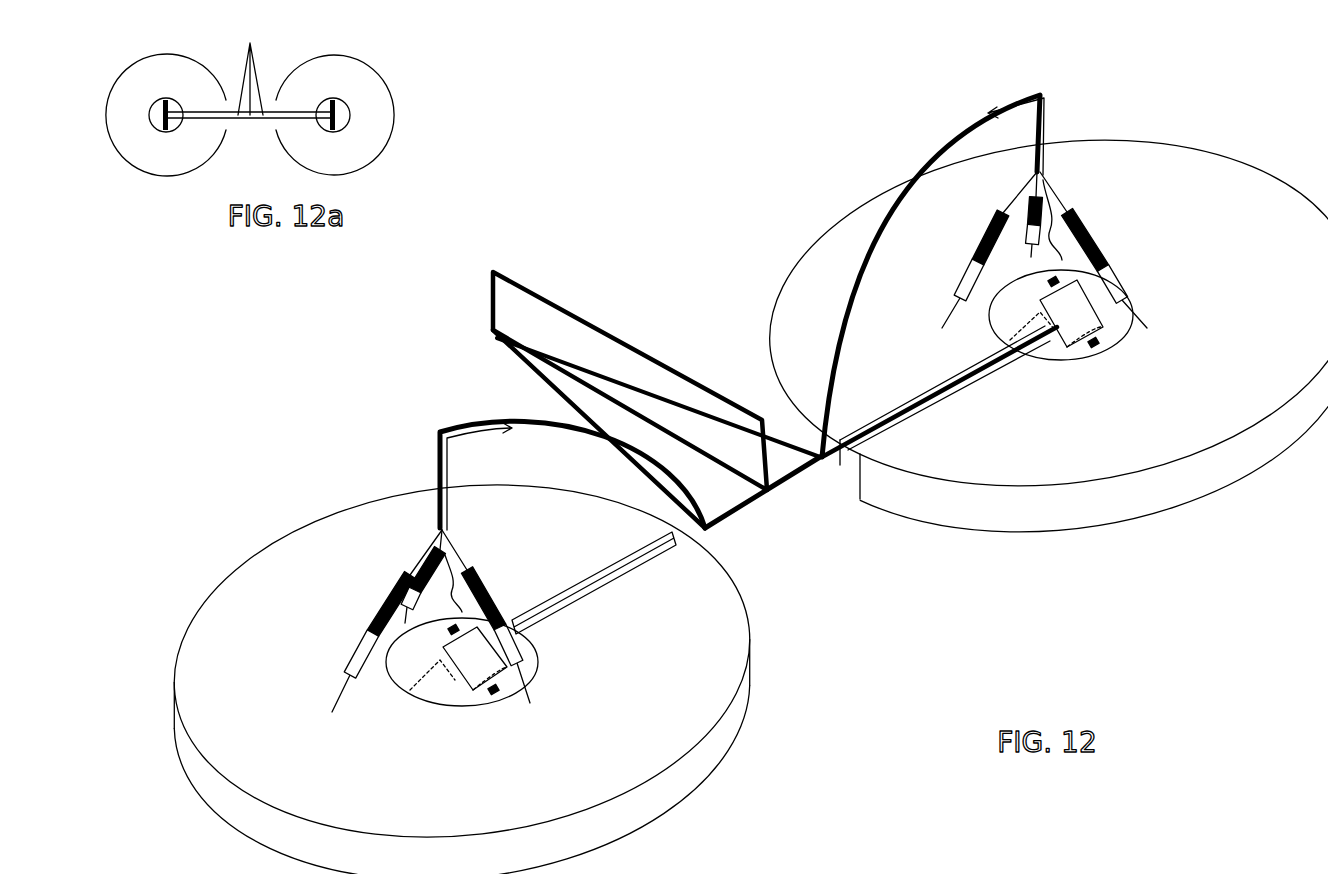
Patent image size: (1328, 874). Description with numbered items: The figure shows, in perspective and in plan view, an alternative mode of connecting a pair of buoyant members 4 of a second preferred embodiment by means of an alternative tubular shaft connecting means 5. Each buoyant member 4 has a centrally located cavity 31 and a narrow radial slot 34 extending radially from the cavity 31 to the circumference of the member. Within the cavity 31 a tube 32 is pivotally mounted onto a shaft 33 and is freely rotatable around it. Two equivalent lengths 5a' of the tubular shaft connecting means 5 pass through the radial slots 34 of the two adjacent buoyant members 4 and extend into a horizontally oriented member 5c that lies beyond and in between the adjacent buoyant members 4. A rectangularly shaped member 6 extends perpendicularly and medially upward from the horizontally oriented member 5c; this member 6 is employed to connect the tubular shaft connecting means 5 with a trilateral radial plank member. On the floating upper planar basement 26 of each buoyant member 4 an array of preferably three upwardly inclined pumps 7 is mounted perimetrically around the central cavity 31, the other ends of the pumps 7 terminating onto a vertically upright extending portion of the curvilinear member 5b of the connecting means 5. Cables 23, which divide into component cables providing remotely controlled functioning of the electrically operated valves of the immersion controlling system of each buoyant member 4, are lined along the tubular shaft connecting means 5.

In FIG. 12a, the buoyant member 4 is at (122, 78).
In FIG. 12, the buoyant member 4 is at (218, 546).
In FIG. 12a, the tubular shaft connecting means 5 is at (263, 113).
In FIG. 12, the tubular shaft connecting means 5 is at (503, 386).
In FIG. 12, the equivalent lengths of the tubular shaft connecting means 5a' is at (784, 480).
In FIG. 12, the curvilinear downwardly extending member 5b is at (453, 427).
In FIG. 12, the horizontally oriented member 5c is at (790, 482).
In FIG. 12, the rectangularly shaped member 6 is at (676, 329).
In FIG. 12, the upwardly inclined pumps 7 is at (383, 610).
In FIG. 12, the cables 23 is at (469, 472).
In FIG. 12, the upper planar basement 26 is at (1196, 244).
In FIG. 12, the centrally located cavity 31 is at (410, 690).
In FIG. 12, the tube 32 is at (472, 664).
In FIG. 12, the shaft 33 is at (518, 694).
In FIG. 12, the narrow radial slot 34 is at (849, 474).